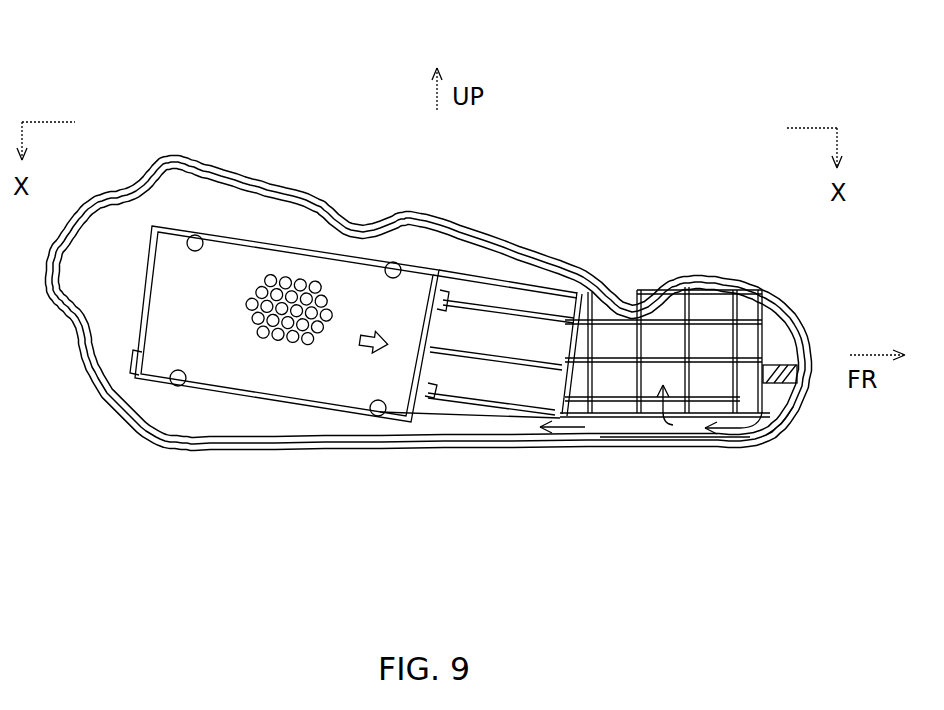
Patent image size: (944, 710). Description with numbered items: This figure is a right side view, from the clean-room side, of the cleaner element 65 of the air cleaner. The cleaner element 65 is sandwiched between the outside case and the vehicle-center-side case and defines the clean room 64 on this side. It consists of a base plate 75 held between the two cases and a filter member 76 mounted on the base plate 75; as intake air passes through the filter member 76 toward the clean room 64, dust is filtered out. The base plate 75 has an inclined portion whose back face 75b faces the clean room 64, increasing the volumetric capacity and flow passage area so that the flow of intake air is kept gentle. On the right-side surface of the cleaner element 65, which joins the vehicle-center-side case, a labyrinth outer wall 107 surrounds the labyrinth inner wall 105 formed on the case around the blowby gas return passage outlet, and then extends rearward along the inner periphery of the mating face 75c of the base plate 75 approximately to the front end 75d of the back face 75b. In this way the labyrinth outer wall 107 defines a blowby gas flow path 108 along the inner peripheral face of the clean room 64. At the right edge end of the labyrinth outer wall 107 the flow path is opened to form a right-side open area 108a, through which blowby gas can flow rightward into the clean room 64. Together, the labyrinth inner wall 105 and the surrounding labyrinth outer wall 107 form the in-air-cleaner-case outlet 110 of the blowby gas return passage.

The clean room 64 is at (198, 429).
The cleaner element 65 is at (512, 218).
The base plate 75 is at (277, 220).
The back face of the inclined portion 75b is at (477, 320).
The mating face 75c is at (738, 442).
The front end of the back face 75d is at (560, 383).
The filter member 76 is at (222, 265).
The labyrinth inner wall 105 is at (803, 434).
The labyrinth outer wall 107 is at (745, 368).
The blowby gas flow path 108 is at (685, 432).
The right-side open area 108a is at (598, 434).
The in-air-cleaner-case outlet 110 is at (780, 383).